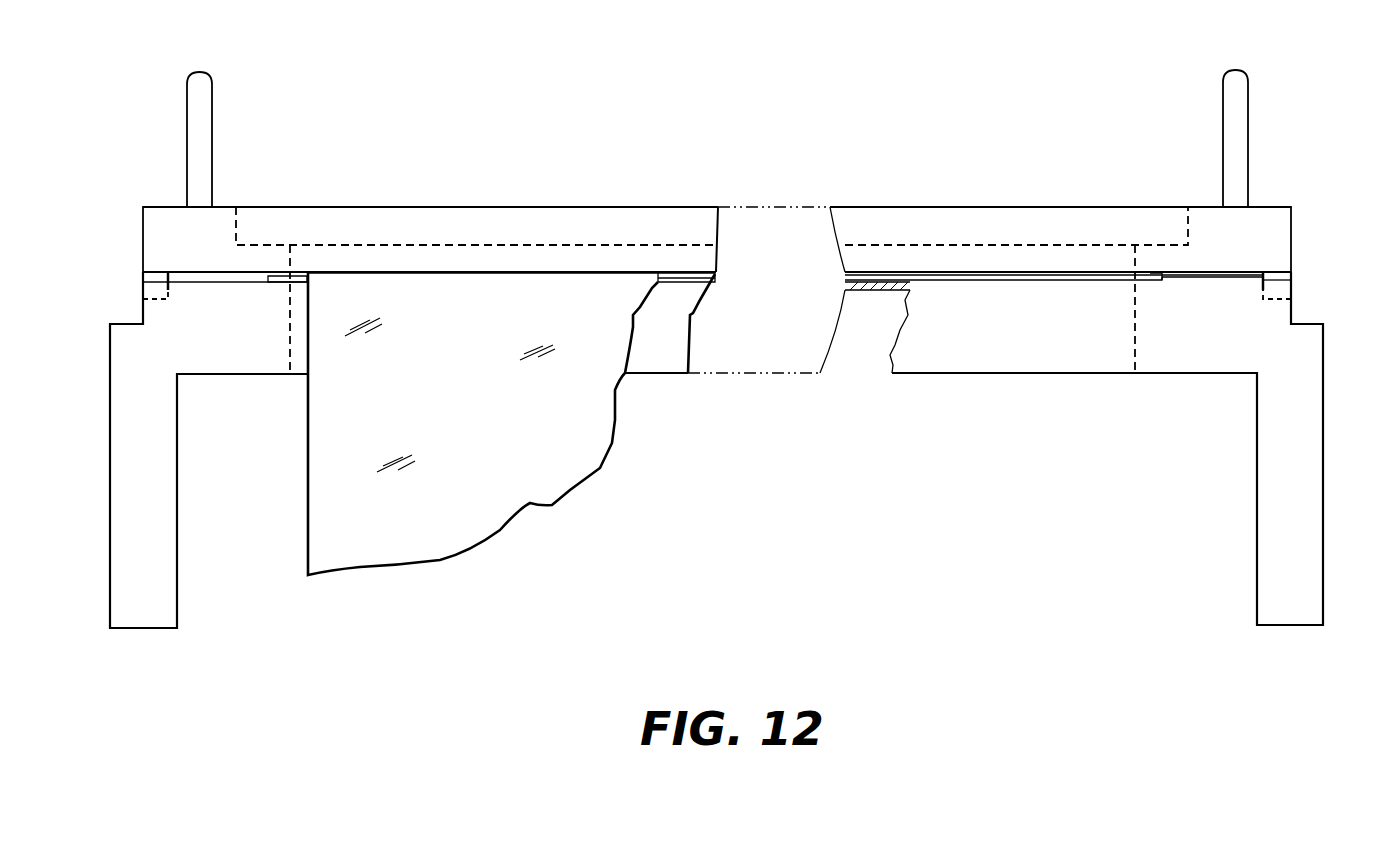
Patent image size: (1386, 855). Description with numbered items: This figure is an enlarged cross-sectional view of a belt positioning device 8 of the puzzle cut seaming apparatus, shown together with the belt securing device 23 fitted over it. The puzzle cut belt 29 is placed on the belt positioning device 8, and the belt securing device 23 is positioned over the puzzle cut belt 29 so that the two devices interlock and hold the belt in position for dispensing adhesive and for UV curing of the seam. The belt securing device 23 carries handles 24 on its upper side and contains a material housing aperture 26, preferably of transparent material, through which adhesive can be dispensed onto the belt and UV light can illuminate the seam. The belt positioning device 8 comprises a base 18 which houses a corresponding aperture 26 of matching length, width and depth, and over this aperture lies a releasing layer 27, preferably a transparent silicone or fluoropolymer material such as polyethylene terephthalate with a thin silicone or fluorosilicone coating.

The belt positioning device 8 is at (82, 372).
The base 18 is at (1303, 358).
The belt securing device 23 is at (178, 232).
The handles 24 is at (195, 83).
The aperture 26 is at (460, 245).
The releasing layer 27 is at (685, 282).
The puzzle cut belt 29 is at (530, 487).